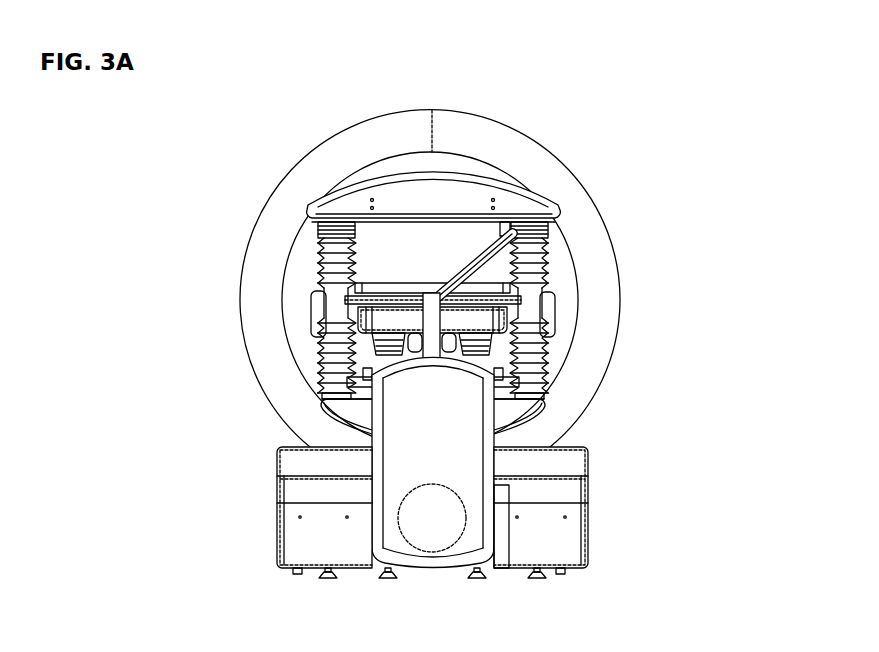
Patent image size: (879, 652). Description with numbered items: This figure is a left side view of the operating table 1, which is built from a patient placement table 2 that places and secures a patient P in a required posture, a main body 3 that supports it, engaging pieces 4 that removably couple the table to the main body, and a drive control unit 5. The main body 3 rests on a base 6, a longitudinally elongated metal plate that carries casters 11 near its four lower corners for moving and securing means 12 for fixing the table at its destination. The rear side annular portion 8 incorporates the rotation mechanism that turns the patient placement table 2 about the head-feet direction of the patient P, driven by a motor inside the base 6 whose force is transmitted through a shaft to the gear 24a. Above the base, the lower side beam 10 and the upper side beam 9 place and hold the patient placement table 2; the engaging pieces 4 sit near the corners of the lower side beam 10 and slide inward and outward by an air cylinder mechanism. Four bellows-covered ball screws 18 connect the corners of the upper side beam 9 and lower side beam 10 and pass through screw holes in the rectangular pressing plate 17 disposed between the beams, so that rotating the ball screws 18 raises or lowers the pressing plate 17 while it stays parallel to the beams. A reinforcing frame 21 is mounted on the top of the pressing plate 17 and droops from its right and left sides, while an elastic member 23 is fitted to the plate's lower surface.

The operating table 1 is at (549, 96).
The patient placement table 2 is at (543, 348).
The main body 3 is at (495, 524).
The engaging piece 4 is at (340, 405).
The drive control unit 5 is at (339, 504).
The base 6 is at (570, 497).
The rear side annular portion 8 is at (555, 162).
The upper side beam 9 is at (438, 176).
The lower side beam 10 is at (340, 432).
The caster 11 is at (560, 575).
The securing means 12 is at (328, 580).
The pressing plate 17 is at (545, 271).
The ball screw 18 is at (320, 355).
The reinforcing frame 21 is at (318, 292).
The elastic member 23 is at (318, 325).
The gear 24a is at (430, 553).
The patient P is at (325, 394).